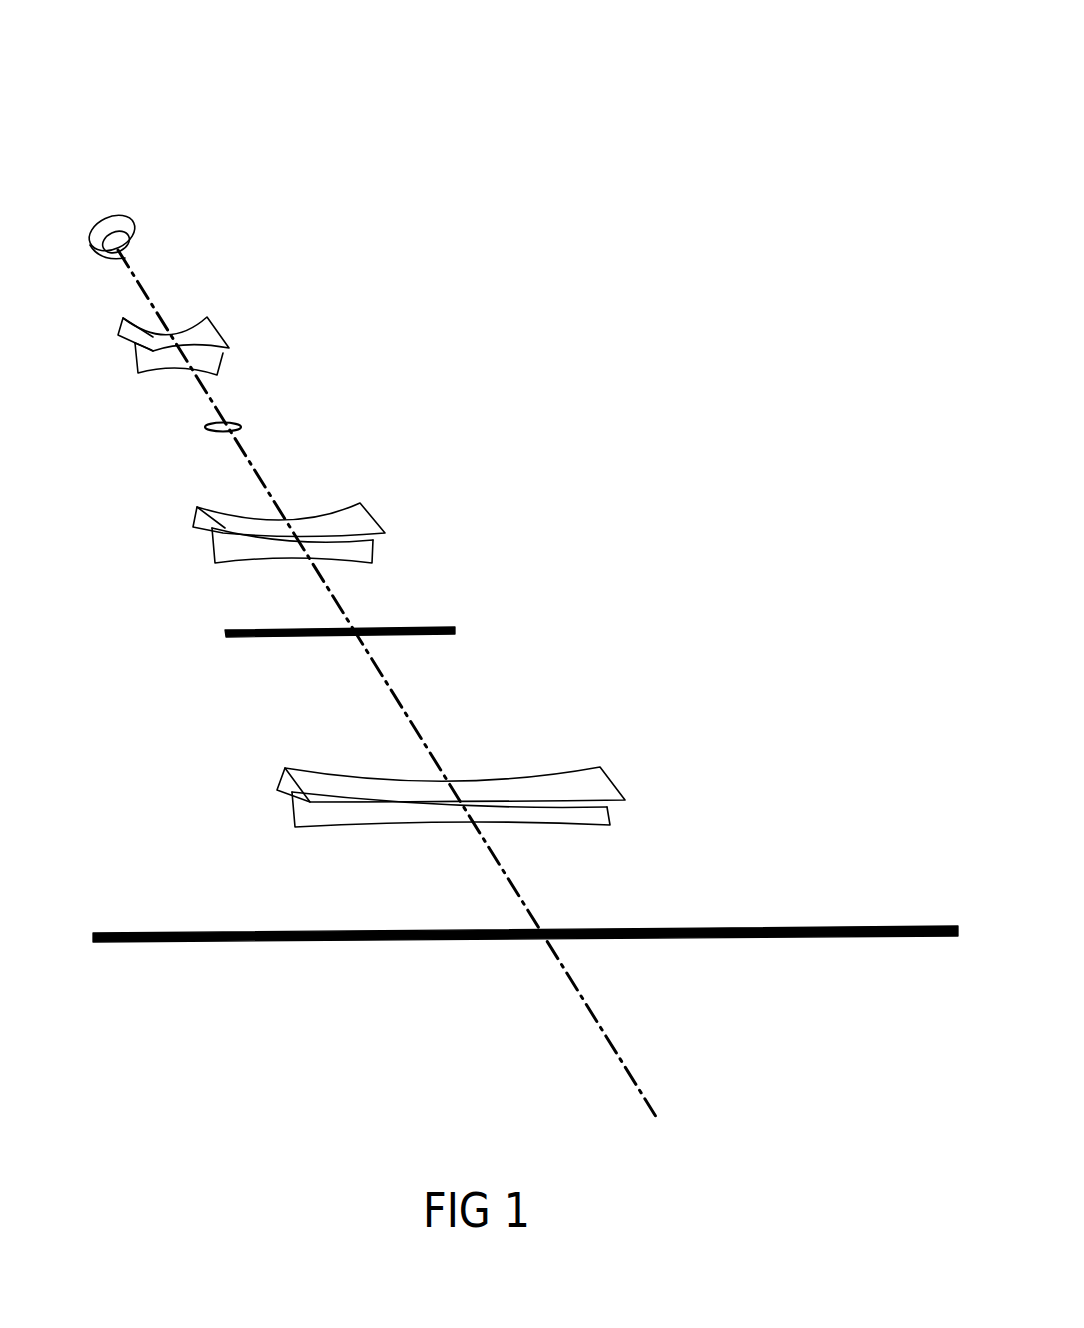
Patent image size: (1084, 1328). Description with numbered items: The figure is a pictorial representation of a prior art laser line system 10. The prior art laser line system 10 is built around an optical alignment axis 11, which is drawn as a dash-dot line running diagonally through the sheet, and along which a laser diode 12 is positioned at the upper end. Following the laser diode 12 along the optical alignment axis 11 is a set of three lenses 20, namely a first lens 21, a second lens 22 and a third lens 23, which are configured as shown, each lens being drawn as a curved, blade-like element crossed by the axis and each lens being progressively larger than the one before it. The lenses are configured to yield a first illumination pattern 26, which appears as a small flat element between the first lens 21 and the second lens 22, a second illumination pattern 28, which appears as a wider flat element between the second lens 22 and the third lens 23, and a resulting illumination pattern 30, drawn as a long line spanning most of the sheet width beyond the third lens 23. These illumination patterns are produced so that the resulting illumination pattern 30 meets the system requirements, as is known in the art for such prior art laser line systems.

The prior art laser line system 10 is at (800, 88).
The optical alignment axis 11 is at (587, 1018).
The laser diode 12 is at (134, 217).
The set of three lenses 20 is at (762, 250).
The first lens 21 is at (225, 318).
The second lens 22 is at (367, 502).
The third lens 23 is at (615, 775).
The first illumination pattern 26 is at (222, 435).
The second illumination pattern 28 is at (458, 628).
The resulting illumination pattern 30 is at (675, 938).